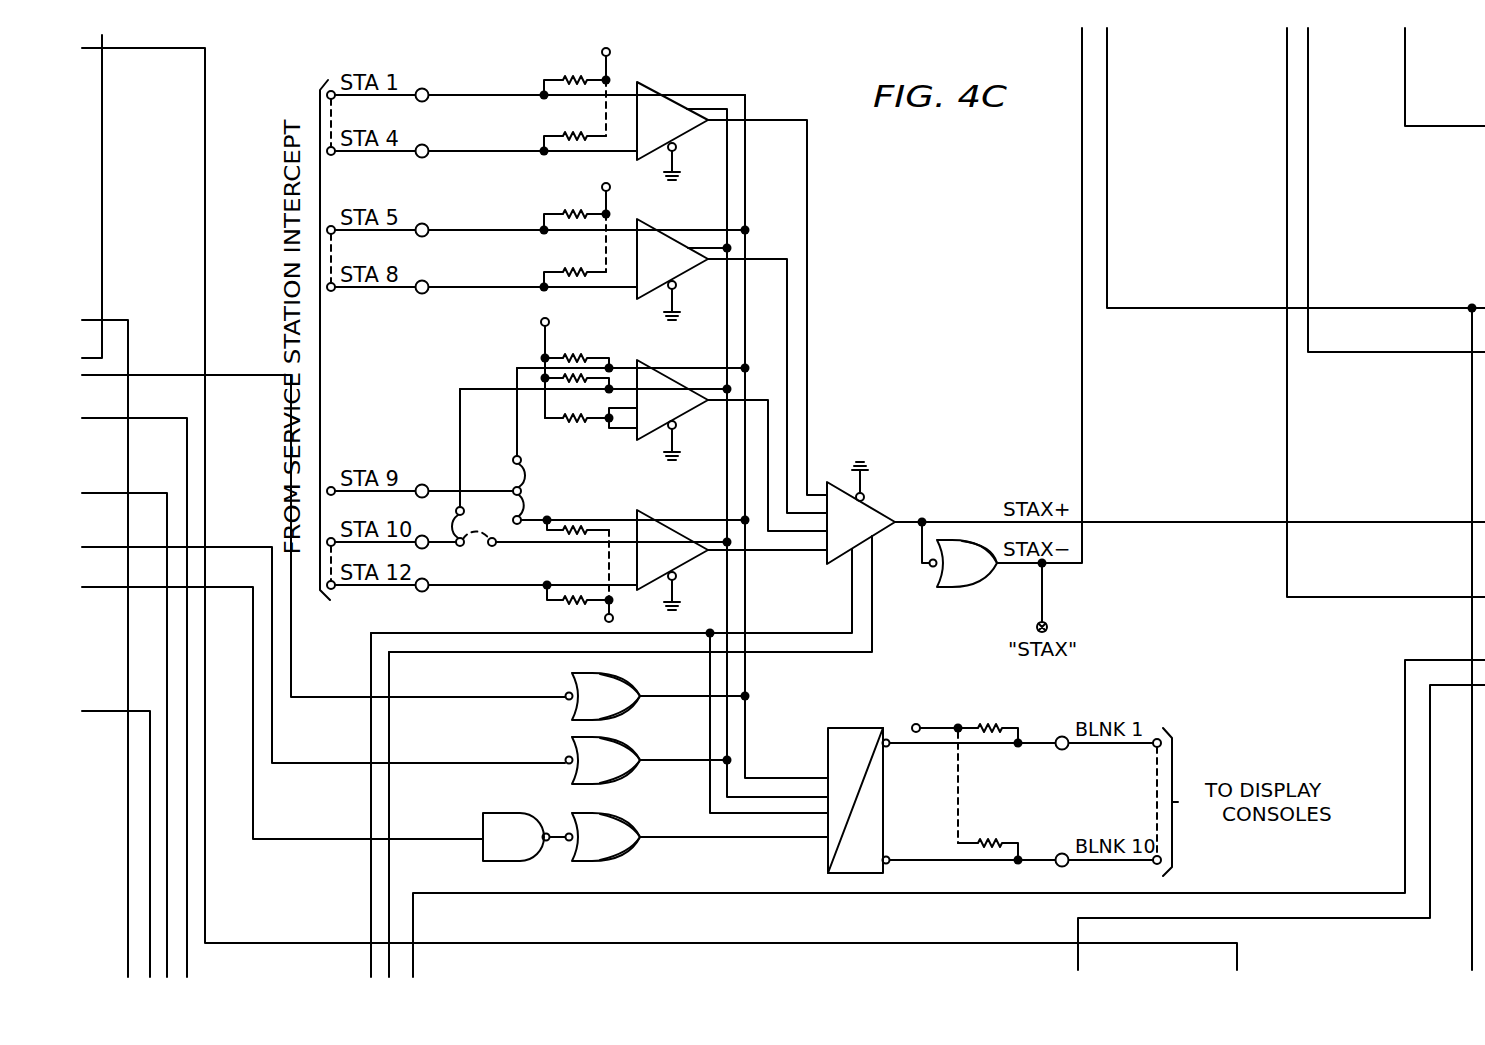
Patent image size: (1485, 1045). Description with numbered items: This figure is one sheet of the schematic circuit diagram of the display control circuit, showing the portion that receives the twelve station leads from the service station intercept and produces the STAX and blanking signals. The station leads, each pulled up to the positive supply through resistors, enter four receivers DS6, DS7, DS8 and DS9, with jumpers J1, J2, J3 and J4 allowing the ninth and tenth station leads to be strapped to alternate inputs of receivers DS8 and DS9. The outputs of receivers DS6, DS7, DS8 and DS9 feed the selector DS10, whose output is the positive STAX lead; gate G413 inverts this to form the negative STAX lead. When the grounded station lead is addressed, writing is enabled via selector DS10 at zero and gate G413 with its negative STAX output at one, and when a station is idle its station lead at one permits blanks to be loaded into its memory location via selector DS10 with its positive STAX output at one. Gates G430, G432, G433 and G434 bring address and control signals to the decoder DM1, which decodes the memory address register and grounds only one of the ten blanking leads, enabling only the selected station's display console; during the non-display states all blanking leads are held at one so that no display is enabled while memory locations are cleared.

The data selector DS6 is at (684, 266).
The data selector DS7 is at (684, 343).
The data selector DS8 is at (643, 420).
The data selector DS9 is at (661, 570).
The data selector DS10 is at (1156, 513).
The gate G413 is at (1002, 330).
The gate G430 is at (658, 696).
The gate G432 is at (649, 760).
The gate G433 is at (524, 837).
The gate G434 is at (697, 837).
The decoder DM1 is at (994, 785).
The jumper J1 is at (442, 525).
The jumper J2 is at (477, 550).
The jumper J3 is at (507, 509).
The jumper J4 is at (507, 475).